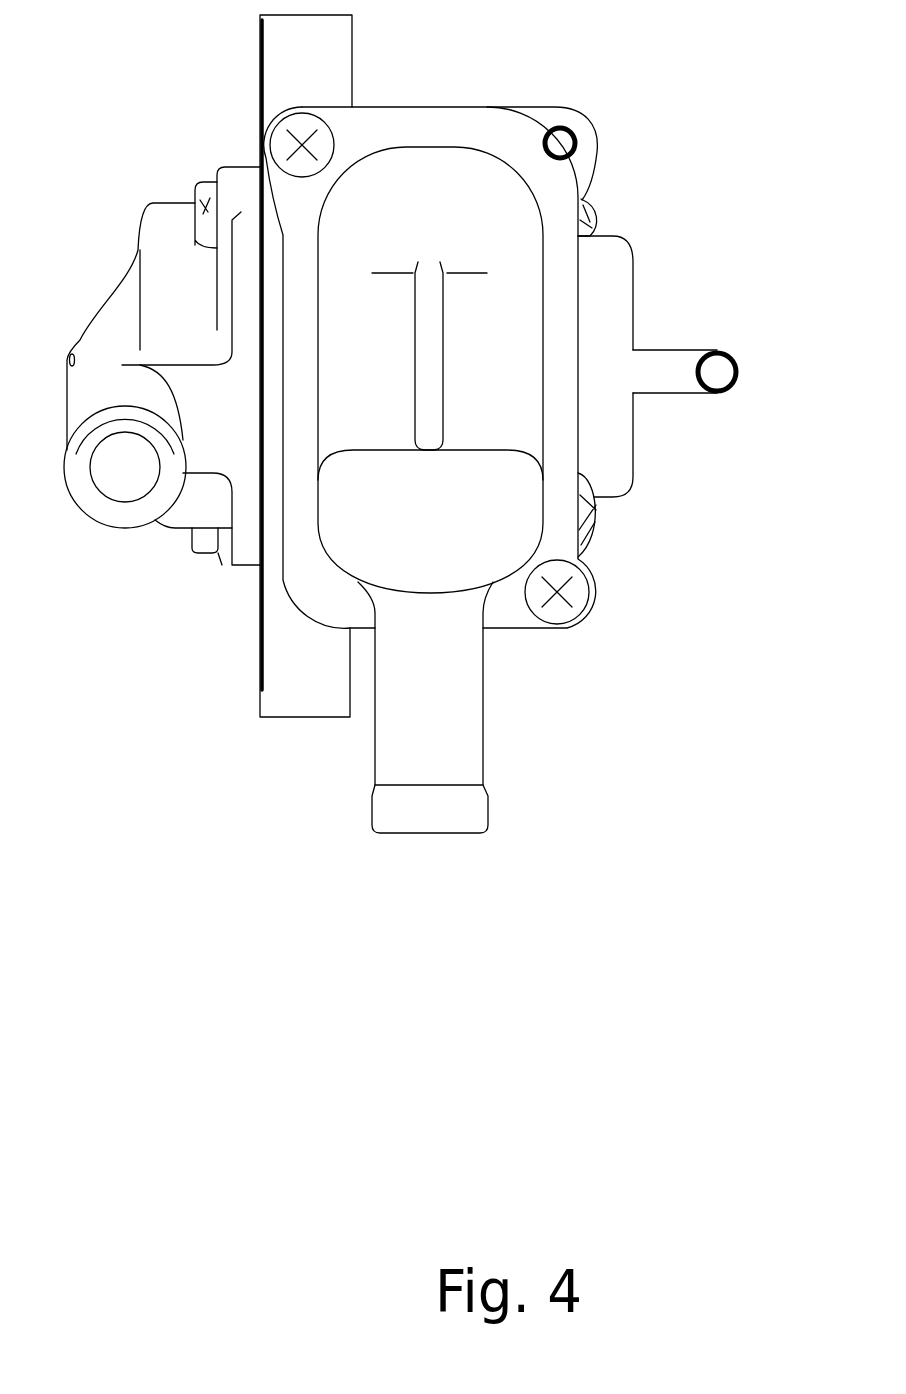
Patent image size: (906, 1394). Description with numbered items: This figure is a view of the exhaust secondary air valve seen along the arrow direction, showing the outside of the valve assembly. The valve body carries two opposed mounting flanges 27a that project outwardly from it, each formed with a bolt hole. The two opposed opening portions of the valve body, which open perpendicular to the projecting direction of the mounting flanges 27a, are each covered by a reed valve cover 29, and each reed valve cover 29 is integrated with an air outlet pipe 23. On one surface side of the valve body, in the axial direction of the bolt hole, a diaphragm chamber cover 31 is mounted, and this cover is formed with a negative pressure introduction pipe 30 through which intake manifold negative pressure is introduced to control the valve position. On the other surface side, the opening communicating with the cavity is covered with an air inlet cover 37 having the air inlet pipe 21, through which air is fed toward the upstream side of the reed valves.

The mounting flange 27a is at (327, 52).
The reed valve cover 29 is at (502, 357).
The air outlet pipe 23 is at (450, 752).
The diaphragm chamber cover 31 is at (607, 283).
The negative pressure introduction pipe 30 is at (738, 363).
The air inlet cover 37 is at (197, 295).
The air inlet pipe 21 is at (90, 513).